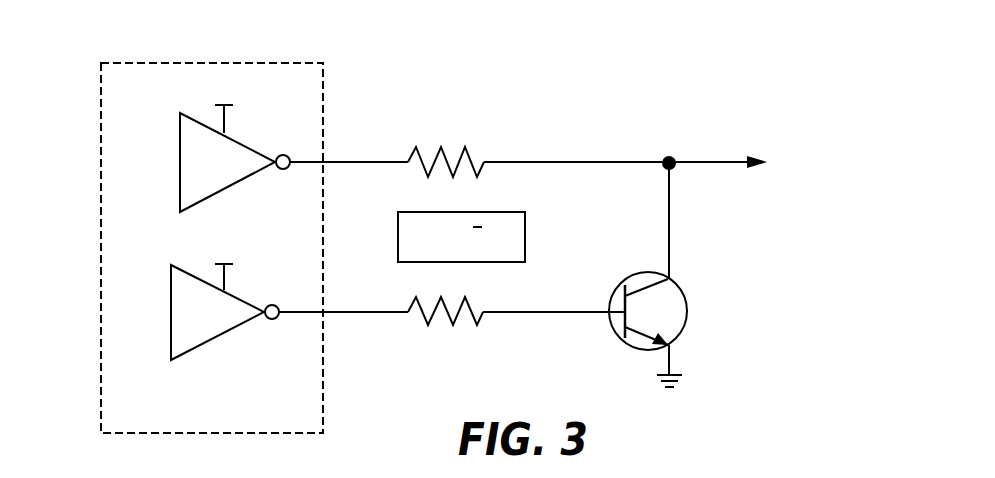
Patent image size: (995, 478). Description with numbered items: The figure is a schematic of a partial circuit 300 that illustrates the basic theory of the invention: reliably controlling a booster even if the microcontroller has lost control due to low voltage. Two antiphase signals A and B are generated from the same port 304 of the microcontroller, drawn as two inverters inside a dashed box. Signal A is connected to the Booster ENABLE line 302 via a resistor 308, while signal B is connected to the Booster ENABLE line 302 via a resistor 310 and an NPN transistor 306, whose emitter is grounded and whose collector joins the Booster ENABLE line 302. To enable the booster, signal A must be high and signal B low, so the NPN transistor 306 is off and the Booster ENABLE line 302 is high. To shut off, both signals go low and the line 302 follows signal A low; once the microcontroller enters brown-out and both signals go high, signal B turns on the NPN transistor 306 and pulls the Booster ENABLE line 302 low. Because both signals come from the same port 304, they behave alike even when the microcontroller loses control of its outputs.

The partial circuit 300 is at (428, 75).
The Booster ENABLE line 302 is at (711, 160).
The port of the microcontroller 304 is at (98, 263).
The NPN transistor 306 is at (680, 285).
The resistor 308 is at (460, 151).
The resistor 310 is at (428, 323).